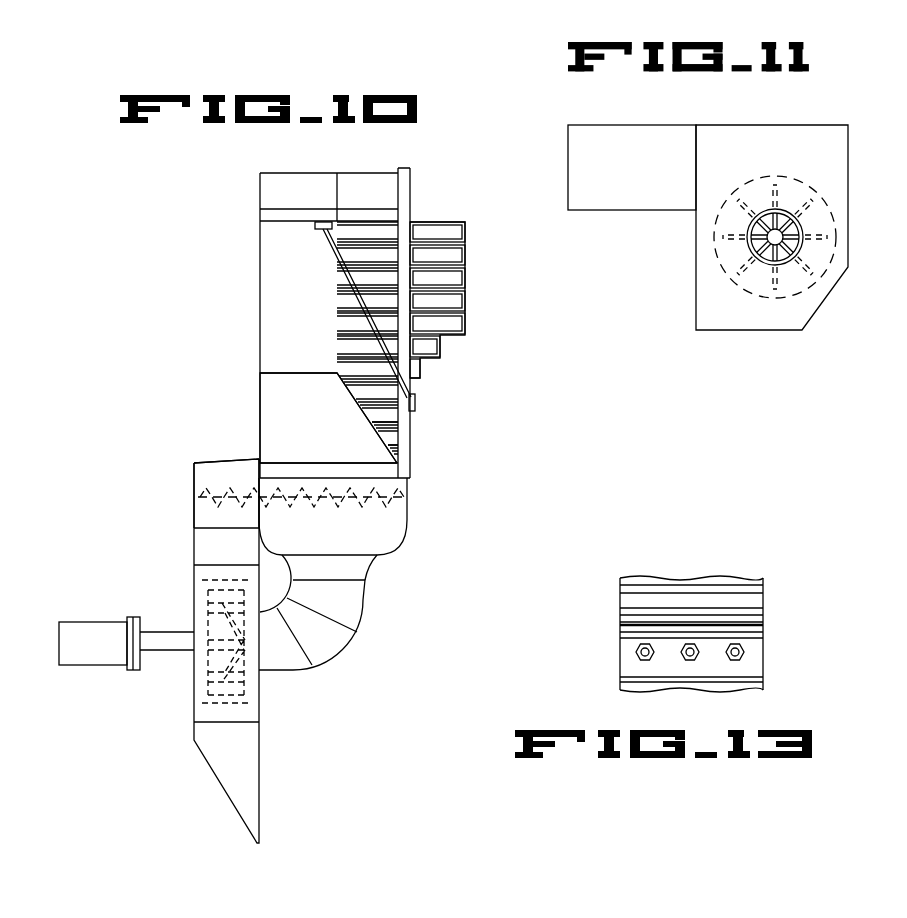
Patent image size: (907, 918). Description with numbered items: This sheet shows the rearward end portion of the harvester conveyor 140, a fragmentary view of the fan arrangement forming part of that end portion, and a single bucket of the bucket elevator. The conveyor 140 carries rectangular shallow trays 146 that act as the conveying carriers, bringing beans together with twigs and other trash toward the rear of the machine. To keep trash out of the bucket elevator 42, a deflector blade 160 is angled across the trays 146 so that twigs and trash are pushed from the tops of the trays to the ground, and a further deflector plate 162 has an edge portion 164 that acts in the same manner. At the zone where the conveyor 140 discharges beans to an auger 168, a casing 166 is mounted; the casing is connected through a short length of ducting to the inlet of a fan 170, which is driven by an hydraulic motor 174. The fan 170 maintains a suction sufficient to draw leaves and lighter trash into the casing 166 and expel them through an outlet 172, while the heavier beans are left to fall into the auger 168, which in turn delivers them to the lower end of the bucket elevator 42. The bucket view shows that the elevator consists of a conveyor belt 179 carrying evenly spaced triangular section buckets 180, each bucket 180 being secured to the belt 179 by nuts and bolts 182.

In FIG. 10, the bucket elevator 42 is at (241, 453).
In FIG. 10, the conveyor 140 is at (401, 363).
In FIG. 10, the trays 146 is at (455, 300).
In FIG. 10, the deflector blade 160 is at (345, 281).
In FIG. 10, the deflector plate 162 is at (330, 445).
In FIG. 10, the edge portion 164 is at (400, 436).
In FIG. 10, the casing 166 is at (385, 545).
In FIG. 10, the auger 168 is at (405, 490).
In FIG. 10, the fan 170 is at (235, 681).
In FIG. 11, the fan 170 is at (740, 243).
In FIG. 10, the outlet 172 is at (225, 772).
In FIG. 11, the outlet 172 is at (653, 183).
In FIG. 10, the hydraulic motor 174 is at (91, 630).
In FIG. 13, the conveyor belt 179 is at (627, 685).
In FIG. 13, the buckets 180 is at (757, 590).
In FIG. 13, the nuts and bolts 182 is at (643, 647).